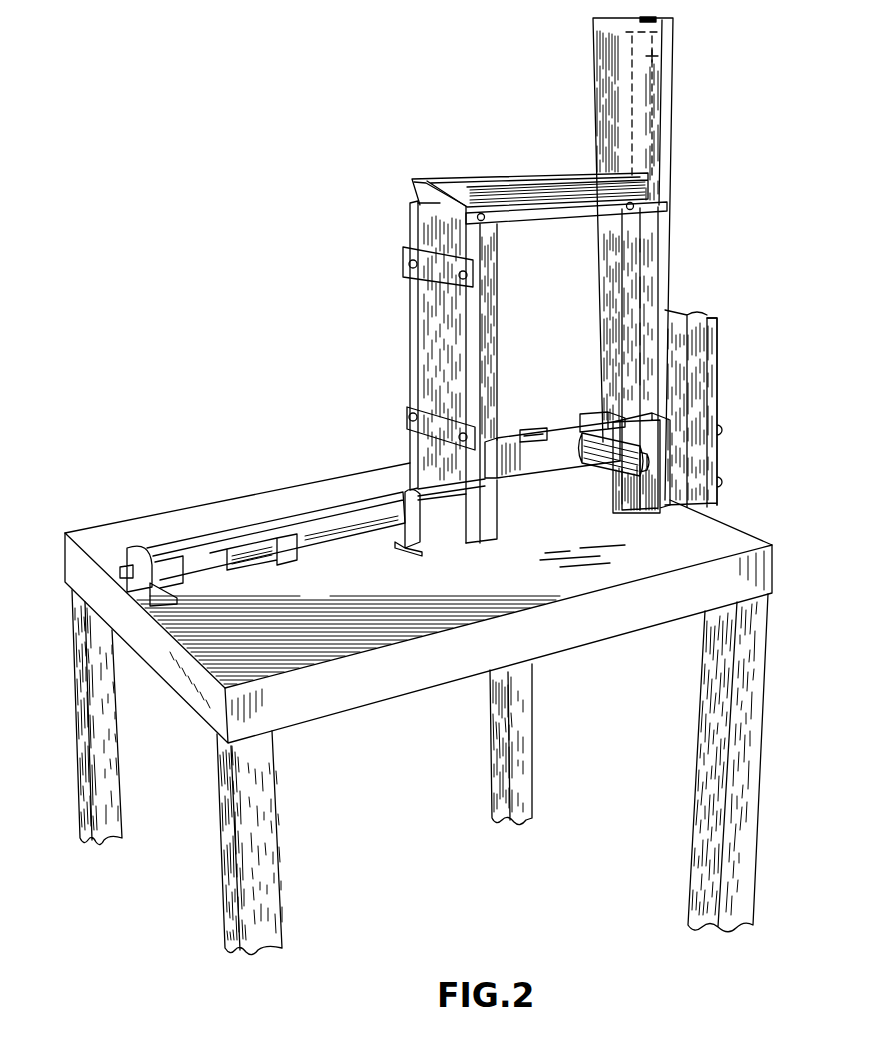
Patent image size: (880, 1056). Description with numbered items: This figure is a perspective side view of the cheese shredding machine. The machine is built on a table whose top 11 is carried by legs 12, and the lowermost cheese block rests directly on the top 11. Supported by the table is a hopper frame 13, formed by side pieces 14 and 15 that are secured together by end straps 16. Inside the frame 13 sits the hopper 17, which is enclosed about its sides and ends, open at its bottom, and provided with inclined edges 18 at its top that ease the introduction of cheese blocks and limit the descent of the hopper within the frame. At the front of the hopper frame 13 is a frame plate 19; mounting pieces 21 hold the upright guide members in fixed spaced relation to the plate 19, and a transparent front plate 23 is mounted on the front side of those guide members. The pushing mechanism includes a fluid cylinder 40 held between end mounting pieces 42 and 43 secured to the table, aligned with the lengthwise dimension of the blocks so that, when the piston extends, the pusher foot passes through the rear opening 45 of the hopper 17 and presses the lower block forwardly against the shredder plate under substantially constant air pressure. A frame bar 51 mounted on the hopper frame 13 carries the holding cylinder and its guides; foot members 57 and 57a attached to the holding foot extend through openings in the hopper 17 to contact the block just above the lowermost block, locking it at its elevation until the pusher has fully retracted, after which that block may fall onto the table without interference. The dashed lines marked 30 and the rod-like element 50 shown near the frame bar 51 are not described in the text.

The table top 11 is at (418, 603).
The legs 12 is at (70, 748).
The hopper frame 13 is at (400, 363).
The side piece 14 is at (636, 315).
The side piece 15 is at (409, 308).
The end straps 16 is at (403, 258).
The hopper 17 is at (480, 163).
The inclined edges 18 is at (411, 190).
The frame plate 19 is at (673, 117).
The mounting pieces 21 is at (620, 543).
The front plate 23 is at (718, 372).
The hidden channel 30 is at (660, 53).
The fluid cylinder 40 is at (238, 535).
The end mounting piece 42 is at (140, 547).
The end mounting piece 43 is at (413, 550).
The rear opening 45 is at (410, 463).
The ram rod 50 is at (603, 470).
The frame bar 51 is at (547, 458).
The foot member 57 is at (612, 411).
The foot member 57a is at (530, 440).